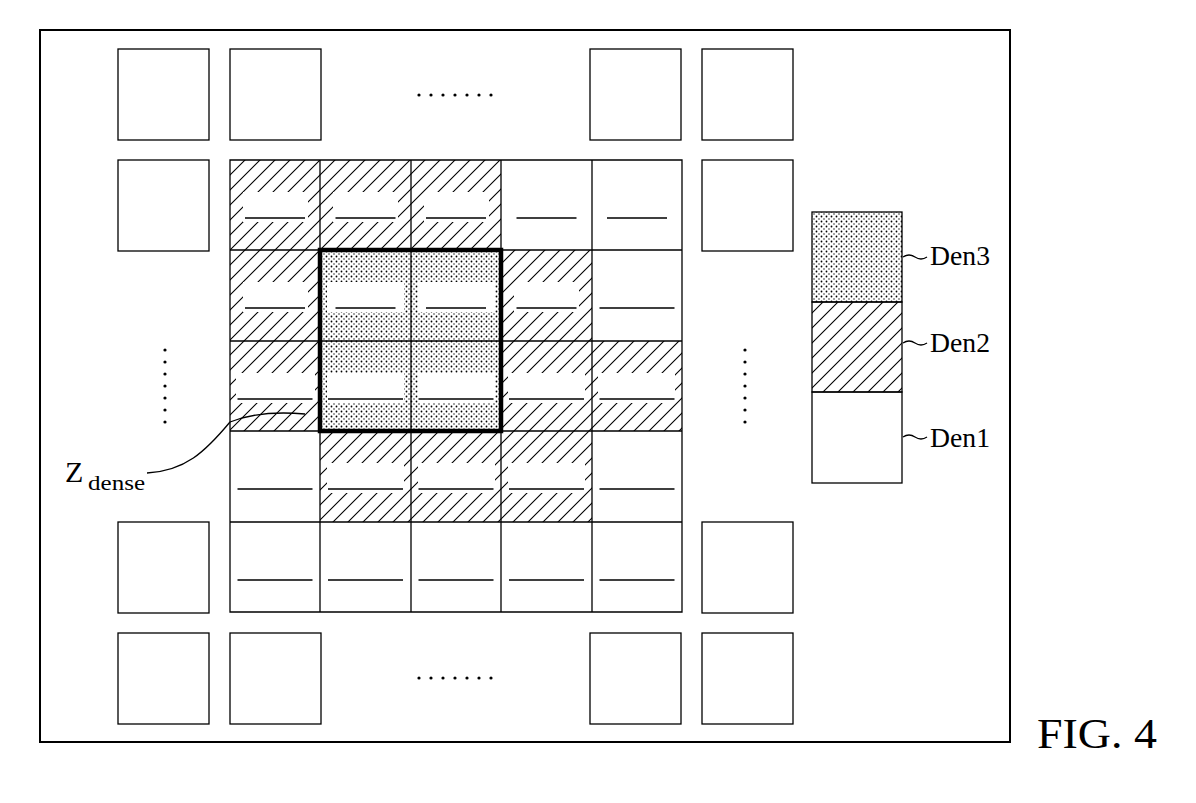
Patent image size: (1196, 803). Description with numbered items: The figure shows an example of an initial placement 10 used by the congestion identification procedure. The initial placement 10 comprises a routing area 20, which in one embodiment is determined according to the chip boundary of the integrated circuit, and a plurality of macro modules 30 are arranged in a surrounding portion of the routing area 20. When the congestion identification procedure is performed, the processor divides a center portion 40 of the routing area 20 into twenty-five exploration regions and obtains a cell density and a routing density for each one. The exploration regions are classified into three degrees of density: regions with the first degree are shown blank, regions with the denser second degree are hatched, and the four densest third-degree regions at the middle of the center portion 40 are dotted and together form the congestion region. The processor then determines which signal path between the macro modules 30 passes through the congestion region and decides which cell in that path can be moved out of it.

The initial placement 10 is at (1012, 385).
The routing area 20 is at (495, 383).
The macro module 30 is at (762, 691).
The center portion 40 is at (455, 625).